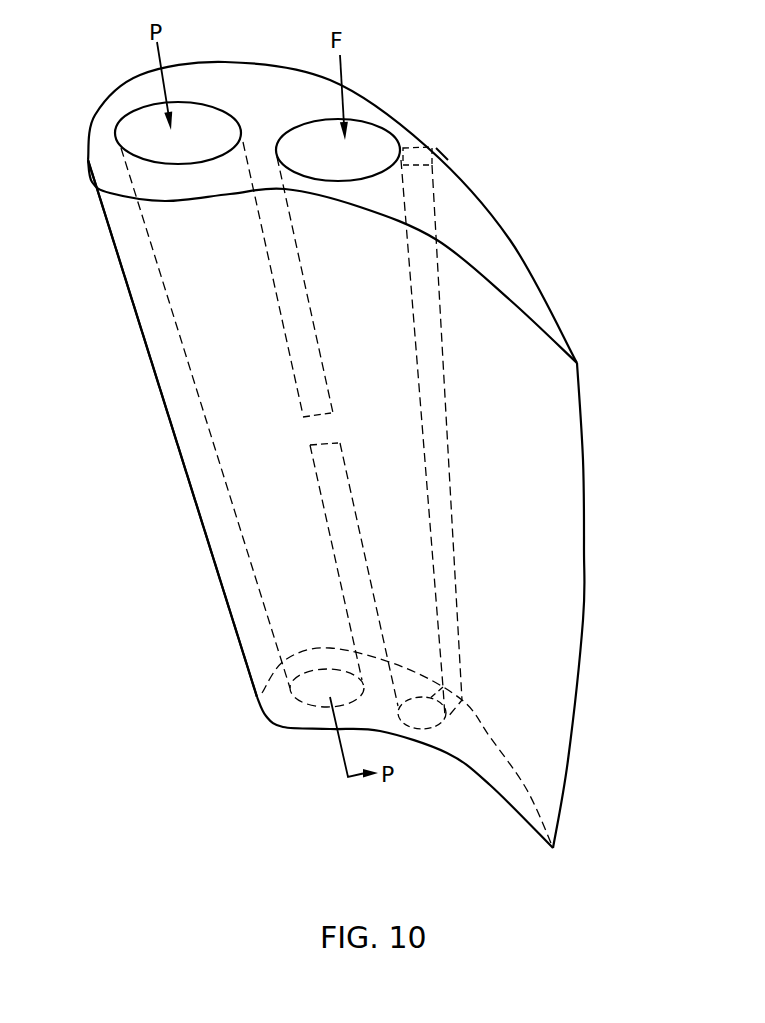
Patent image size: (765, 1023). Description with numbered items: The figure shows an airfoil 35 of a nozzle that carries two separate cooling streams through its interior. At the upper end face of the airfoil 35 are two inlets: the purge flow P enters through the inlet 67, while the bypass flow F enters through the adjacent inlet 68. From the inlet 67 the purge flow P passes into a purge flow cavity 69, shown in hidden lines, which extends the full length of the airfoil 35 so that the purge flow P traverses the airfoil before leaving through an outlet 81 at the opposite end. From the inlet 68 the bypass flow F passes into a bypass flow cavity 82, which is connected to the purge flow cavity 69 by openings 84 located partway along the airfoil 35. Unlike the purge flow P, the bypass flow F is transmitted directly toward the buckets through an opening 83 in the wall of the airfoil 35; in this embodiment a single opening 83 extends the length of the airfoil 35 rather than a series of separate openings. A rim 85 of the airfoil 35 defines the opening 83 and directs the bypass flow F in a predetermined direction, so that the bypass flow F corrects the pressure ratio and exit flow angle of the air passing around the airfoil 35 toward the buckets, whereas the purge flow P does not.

The airfoil 35 is at (555, 450).
The inlet 67 is at (118, 132).
The inlet 68 is at (390, 125).
The purge flow cavity 69 is at (228, 380).
The outlet 81 is at (302, 707).
The bypass flow cavity 82 is at (376, 308).
The opening 83 is at (445, 155).
The openings 84 is at (318, 440).
The rim 85 is at (425, 146).